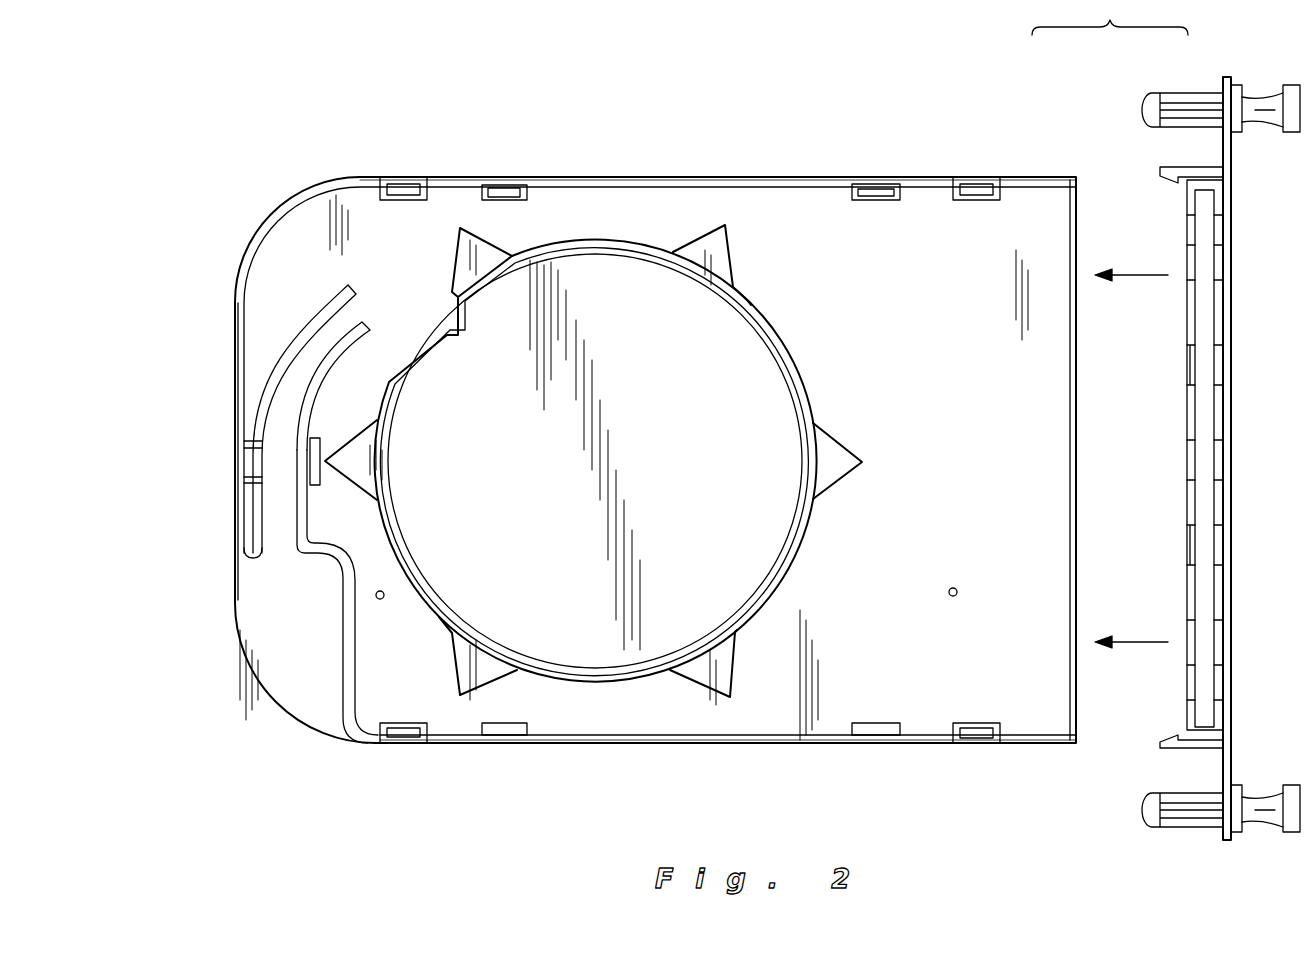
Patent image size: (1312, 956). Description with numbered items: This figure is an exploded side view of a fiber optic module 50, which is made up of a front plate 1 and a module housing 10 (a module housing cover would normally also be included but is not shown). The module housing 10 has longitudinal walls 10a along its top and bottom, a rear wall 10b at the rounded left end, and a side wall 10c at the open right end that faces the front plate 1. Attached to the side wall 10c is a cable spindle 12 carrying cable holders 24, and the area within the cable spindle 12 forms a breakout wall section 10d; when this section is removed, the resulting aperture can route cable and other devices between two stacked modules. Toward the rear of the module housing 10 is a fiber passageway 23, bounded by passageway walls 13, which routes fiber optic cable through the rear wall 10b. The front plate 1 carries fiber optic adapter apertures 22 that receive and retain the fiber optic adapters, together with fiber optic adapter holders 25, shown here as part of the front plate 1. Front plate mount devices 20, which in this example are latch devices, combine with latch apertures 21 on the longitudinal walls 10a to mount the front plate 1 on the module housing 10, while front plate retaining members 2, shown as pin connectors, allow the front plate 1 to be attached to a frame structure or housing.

The fiber optic module 50 is at (446, 140).
The module housing 10 is at (790, 240).
The longitudinal walls 10a is at (604, 176).
The rear wall 10b is at (235, 410).
The side wall 10c is at (985, 355).
The breakout wall section 10d is at (715, 485).
The cable spindle 12 is at (455, 615).
The passageway walls 13 is at (317, 367).
The fiber passageway 23 is at (330, 327).
The latch apertures 21 is at (985, 182).
The cable holders 24 is at (845, 480).
The front plate 1 is at (1232, 312).
The front plate retaining members 2 is at (1183, 105).
The front plate mount devices 20 is at (1160, 165).
The fiber optic adapter apertures 22 is at (1190, 365).
The fiber optic adapter holders 25 is at (1217, 240).